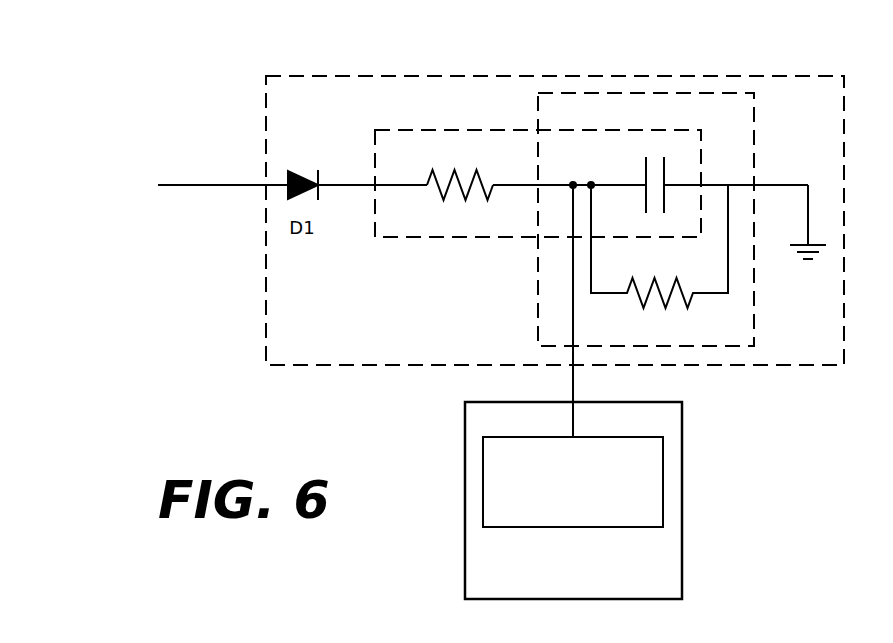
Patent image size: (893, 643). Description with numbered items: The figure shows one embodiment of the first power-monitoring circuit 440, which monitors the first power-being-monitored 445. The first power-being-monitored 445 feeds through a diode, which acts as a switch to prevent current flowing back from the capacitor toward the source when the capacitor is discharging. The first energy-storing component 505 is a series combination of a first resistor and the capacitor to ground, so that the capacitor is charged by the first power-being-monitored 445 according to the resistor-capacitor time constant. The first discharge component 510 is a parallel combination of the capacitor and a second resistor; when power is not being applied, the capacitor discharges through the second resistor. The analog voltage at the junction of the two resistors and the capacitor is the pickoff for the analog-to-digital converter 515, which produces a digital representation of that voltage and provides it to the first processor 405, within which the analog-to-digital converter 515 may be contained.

The first power-being-monitored 445 is at (87, 124).
The first power-monitoring circuit 440 is at (266, 293).
The first energy-storing component 505 is at (482, 130).
The first discharge component 510 is at (673, 93).
The first processor 405 is at (682, 500).
The analog-to-digital converter 515 is at (620, 527).